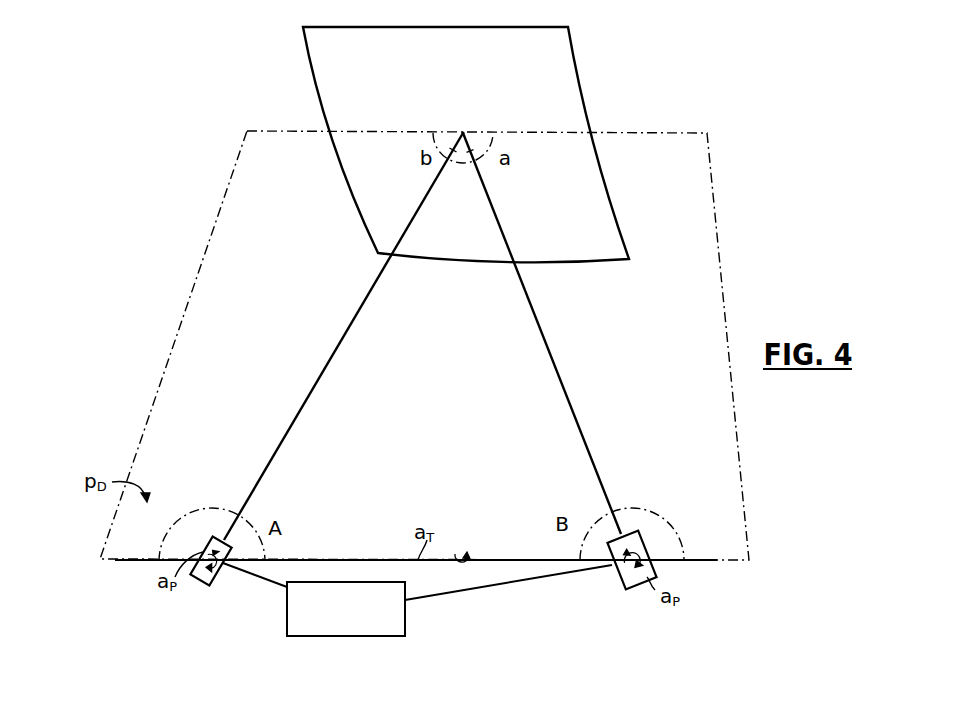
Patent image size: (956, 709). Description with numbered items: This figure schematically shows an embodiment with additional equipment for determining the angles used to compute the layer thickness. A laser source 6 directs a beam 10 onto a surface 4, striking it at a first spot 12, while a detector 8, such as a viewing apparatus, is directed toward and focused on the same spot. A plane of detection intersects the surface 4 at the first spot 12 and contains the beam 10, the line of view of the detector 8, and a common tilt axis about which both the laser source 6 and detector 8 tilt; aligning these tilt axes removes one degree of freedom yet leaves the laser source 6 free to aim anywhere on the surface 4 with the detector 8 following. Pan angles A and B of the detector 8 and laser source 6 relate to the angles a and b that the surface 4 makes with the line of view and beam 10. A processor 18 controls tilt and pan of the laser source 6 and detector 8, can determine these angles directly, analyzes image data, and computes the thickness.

The surface 4 is at (369, 185).
The first spot 12 is at (463, 133).
The beam 10 is at (572, 403).
The detector 8 is at (213, 585).
The laser source 6 is at (625, 582).
The processor 18 is at (398, 622).